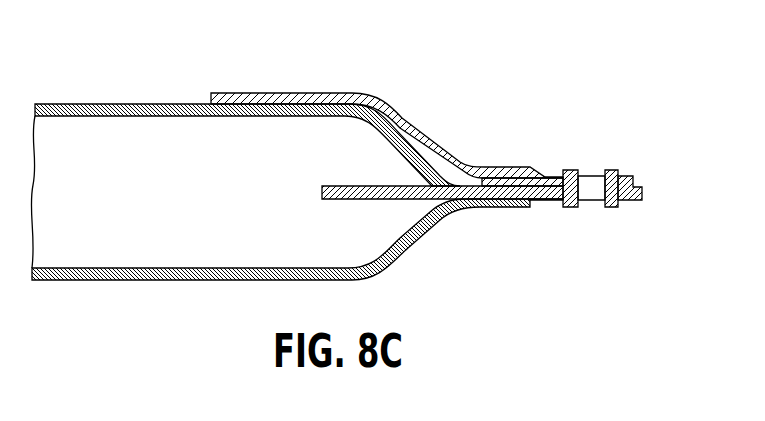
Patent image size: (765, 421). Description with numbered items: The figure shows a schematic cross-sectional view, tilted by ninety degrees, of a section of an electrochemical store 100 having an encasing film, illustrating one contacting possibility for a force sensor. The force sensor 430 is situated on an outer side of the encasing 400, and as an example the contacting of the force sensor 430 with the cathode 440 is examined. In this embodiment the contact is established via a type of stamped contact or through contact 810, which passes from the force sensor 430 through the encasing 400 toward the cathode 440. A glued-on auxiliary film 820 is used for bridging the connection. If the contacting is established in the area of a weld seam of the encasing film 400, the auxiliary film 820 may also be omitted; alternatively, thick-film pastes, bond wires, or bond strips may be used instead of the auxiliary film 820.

The encasing 400 is at (90, 104).
The force sensor 430 is at (283, 93).
The auxiliary film 820 is at (539, 168).
The through contact 810 is at (615, 170).
The cathode 440 is at (633, 185).
The electrochemical store 100 is at (522, 261).